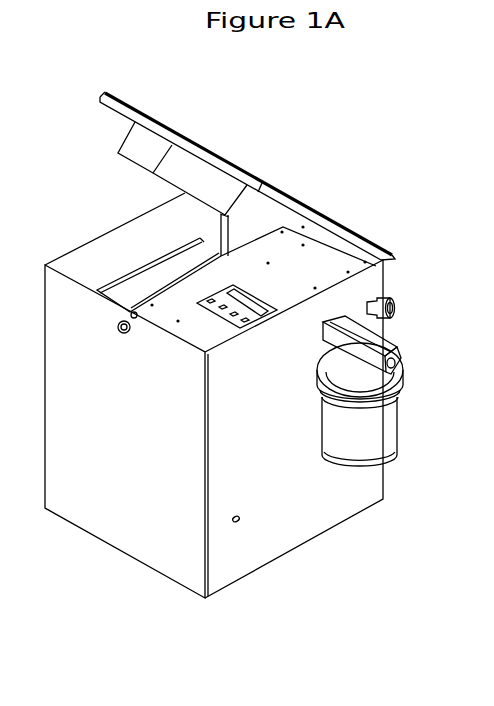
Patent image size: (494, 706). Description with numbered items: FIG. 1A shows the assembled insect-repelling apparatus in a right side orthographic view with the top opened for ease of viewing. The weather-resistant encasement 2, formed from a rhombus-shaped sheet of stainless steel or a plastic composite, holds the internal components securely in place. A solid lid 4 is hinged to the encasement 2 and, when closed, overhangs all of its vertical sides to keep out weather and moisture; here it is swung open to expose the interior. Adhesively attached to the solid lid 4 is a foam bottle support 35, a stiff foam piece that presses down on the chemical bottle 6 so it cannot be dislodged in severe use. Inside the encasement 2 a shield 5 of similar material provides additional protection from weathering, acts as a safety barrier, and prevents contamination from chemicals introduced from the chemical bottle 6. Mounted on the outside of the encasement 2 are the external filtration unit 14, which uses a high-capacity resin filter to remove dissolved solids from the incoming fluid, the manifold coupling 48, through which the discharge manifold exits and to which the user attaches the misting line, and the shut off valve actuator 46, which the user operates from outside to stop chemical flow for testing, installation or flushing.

The encasement 2 is at (92, 464).
The solid lid 4 is at (258, 177).
The shield 5 is at (258, 252).
The chemical bottle 6 is at (142, 285).
The external filtration unit 14 is at (393, 467).
The foam bottle support 35 is at (118, 136).
The shut off valve actuator 46 is at (240, 535).
The manifold coupling 48 is at (394, 298).